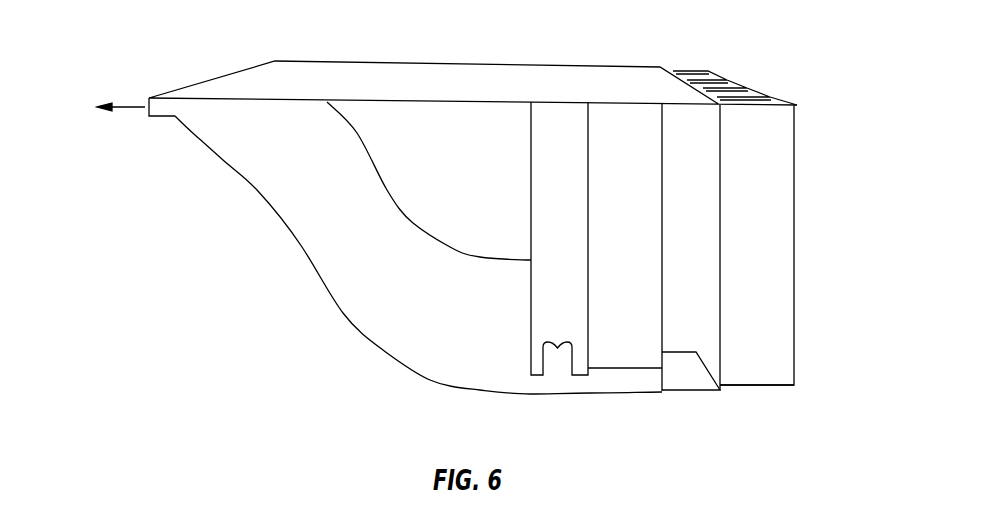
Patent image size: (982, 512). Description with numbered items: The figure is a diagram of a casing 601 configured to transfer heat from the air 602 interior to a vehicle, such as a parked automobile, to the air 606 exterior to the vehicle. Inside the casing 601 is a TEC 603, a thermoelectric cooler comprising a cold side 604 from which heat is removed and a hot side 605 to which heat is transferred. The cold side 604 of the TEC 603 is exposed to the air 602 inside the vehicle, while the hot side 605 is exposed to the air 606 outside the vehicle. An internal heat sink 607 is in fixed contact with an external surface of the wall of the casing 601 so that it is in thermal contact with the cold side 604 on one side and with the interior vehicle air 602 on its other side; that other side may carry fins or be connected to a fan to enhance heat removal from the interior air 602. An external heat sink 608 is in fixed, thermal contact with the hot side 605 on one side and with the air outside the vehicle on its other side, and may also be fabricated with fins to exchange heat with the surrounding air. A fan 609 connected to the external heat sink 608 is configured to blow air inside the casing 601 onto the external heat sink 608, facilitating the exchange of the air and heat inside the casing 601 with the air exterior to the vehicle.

The casing 601 is at (467, 87).
The air interior to the vehicle 602 is at (867, 260).
The TEC 603 is at (703, 117).
The cold side 604 is at (708, 338).
The hot side 605 is at (664, 355).
The air exterior to the vehicle 606 is at (484, 206).
The internal heat sink 607 is at (773, 165).
The external heat sink 608 is at (617, 117).
The fan 609 is at (567, 117).